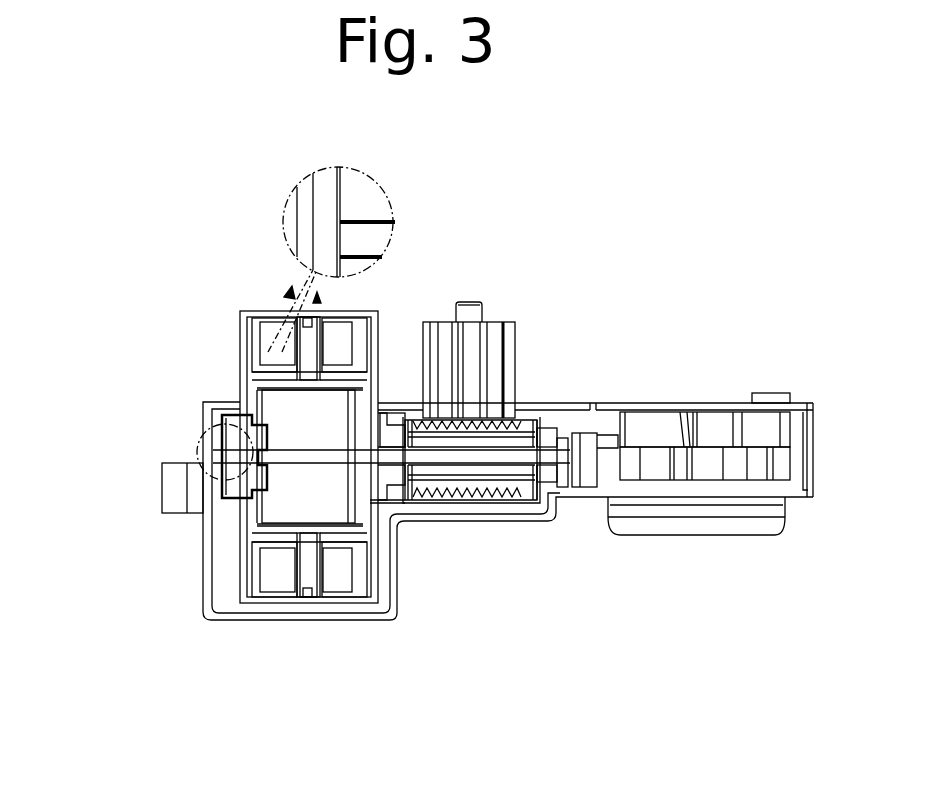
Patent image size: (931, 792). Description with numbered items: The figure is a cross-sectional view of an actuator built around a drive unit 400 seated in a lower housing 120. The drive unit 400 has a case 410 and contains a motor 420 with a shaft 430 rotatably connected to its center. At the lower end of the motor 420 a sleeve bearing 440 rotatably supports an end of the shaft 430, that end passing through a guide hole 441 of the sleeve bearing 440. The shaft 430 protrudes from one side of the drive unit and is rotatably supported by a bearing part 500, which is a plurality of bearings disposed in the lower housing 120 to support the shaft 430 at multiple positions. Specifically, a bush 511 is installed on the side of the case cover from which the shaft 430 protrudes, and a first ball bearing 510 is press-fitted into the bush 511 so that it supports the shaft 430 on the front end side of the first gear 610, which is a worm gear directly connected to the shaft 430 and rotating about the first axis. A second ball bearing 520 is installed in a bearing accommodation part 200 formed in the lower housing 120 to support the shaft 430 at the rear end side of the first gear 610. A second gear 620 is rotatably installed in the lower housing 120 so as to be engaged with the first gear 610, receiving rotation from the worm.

The lower housing 120 is at (698, 485).
The bearing accommodation part 200 is at (566, 453).
The drive unit 400 is at (226, 325).
The case 410 is at (287, 600).
The motor 420 is at (292, 507).
The shaft 430 is at (356, 237).
The sleeve bearing 440 is at (355, 190).
The guide hole 441 is at (200, 445).
The bearing part 500 is at (486, 526).
The first ball bearing 510 is at (405, 497).
The bush 511 is at (385, 425).
The second ball bearing 520 is at (547, 478).
The first gear 610 is at (517, 437).
The second gear 620 is at (493, 332).